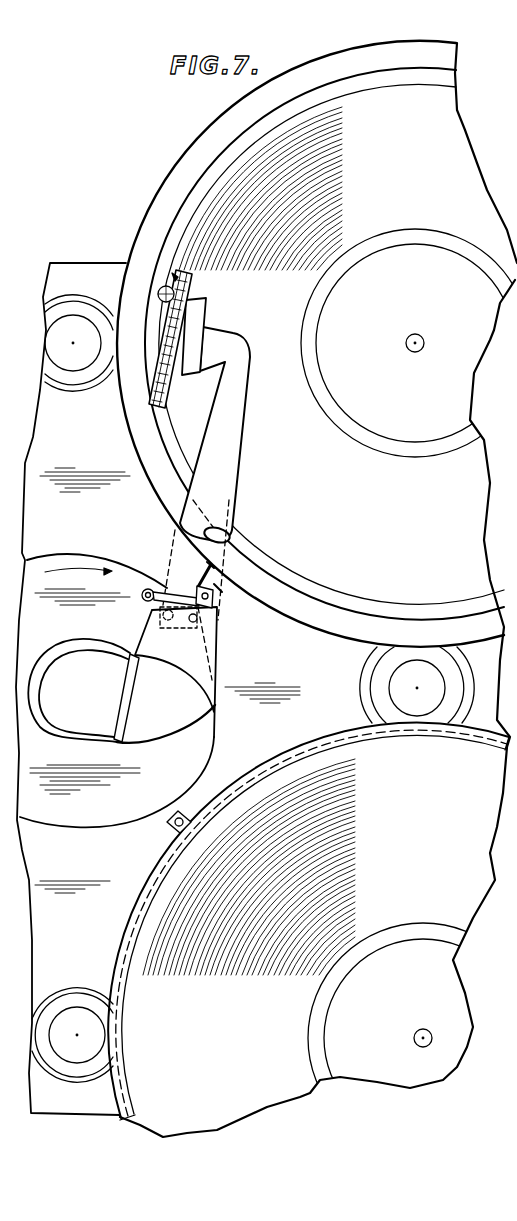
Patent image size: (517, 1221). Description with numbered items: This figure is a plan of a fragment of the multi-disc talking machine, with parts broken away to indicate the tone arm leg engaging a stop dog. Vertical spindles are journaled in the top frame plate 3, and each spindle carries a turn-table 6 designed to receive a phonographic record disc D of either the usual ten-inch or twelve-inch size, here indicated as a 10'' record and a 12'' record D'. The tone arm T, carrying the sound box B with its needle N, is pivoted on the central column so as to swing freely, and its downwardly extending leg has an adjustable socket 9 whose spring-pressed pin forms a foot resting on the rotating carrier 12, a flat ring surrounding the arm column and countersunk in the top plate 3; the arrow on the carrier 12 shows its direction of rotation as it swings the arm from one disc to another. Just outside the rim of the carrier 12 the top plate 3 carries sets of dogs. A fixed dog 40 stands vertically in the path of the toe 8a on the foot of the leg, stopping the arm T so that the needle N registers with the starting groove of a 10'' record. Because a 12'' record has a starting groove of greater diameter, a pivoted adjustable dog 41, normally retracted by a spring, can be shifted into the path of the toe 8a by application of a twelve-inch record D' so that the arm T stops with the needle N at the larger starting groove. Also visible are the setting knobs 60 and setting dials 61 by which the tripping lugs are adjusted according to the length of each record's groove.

The top frame plate 3 is at (80, 267).
The turn-table 6 is at (192, 145).
The 10-inch record 10'' is at (310, 328).
The phonographic record disc D is at (318, 282).
The 12-inch record D' is at (312, 938).
The needle N is at (173, 276).
The sound box B is at (197, 317).
The tone arm T is at (230, 453).
The setting knob 60 is at (77, 357).
The setting dial 61 is at (371, 665).
The rotating carrier 12 is at (118, 674).
The 12-inch record 12'' is at (139, 1127).
The adjustable socket 9 is at (142, 598).
The adjustable dog 41 is at (210, 570).
The fixed dog 40 is at (213, 600).
The toe 8a is at (227, 590).